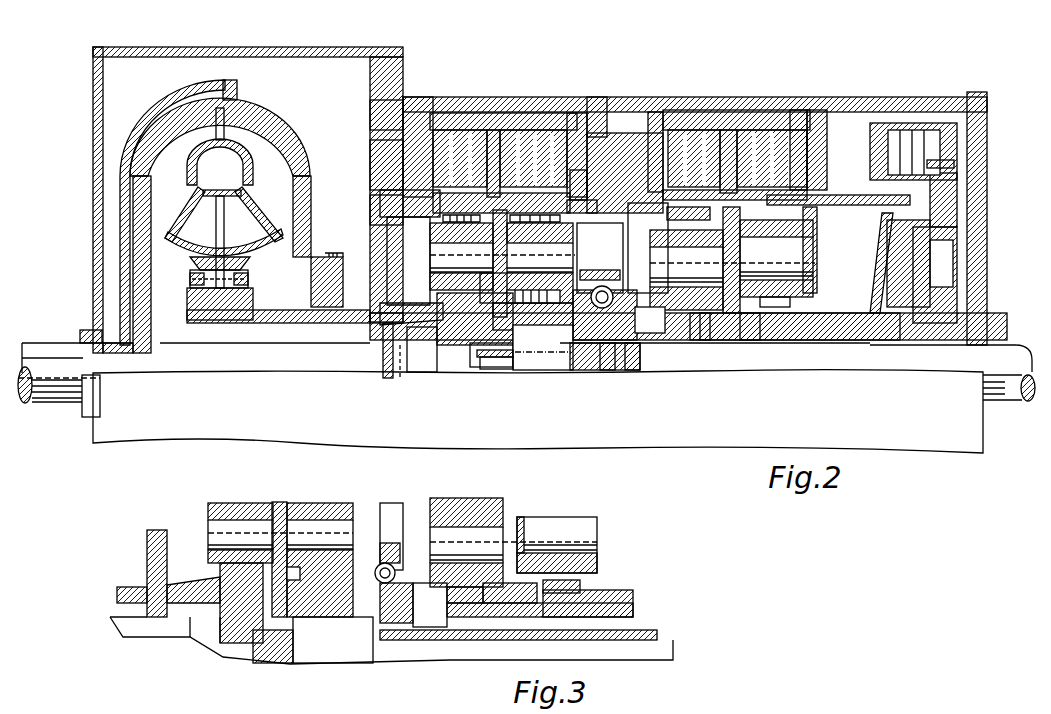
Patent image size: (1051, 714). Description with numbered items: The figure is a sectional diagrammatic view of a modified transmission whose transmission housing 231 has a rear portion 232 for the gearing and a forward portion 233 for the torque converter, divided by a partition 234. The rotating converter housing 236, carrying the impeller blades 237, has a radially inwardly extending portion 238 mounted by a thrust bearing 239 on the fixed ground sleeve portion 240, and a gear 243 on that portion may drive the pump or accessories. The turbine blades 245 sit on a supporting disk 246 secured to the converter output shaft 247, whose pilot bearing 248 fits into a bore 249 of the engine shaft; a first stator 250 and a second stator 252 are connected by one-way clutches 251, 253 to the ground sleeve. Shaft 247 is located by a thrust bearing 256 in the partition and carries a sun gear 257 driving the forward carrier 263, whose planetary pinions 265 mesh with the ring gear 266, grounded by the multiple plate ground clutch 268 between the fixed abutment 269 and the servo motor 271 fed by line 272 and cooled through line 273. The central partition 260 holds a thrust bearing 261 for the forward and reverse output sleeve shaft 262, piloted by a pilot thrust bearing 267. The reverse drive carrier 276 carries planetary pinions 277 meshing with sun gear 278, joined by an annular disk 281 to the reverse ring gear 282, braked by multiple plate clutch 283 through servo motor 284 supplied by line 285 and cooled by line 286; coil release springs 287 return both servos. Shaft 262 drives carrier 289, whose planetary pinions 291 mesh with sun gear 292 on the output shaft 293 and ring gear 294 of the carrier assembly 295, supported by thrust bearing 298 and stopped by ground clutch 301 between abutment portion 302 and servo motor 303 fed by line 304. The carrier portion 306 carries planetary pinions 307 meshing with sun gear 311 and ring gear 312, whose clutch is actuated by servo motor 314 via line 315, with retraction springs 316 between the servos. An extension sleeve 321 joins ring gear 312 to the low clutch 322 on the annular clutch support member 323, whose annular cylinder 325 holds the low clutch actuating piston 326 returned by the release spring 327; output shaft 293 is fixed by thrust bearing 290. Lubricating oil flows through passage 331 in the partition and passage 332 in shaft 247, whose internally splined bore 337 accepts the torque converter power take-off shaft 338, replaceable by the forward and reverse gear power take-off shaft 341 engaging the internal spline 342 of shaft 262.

In FIG. 2, the transmission housing 231 is at (973, 89).
In FIG. 2, the rear portion 232 is at (657, 97).
In FIG. 2, the forward portion 233 is at (122, 47).
In FIG. 2, the partition 234 is at (372, 163).
In FIG. 3, the partition 234 is at (150, 570).
In FIG. 2, the converter housing 236 is at (236, 84).
In FIG. 2, the impeller blades 237 is at (280, 133).
In FIG. 2, the radially inwardly extending portion 238 is at (308, 233).
In FIG. 2, the thrust bearing 239 is at (315, 323).
In FIG. 2, the ground sleeve portion 240 is at (243, 323).
In FIG. 2, the gear 243 is at (327, 263).
In FIG. 2, the turbine blades 245 is at (180, 123).
In FIG. 2, the supporting disk 246 is at (147, 337).
In FIG. 2, the converter output shaft 247 is at (177, 367).
In FIG. 3, the converter output shaft 247 is at (193, 630).
In FIG. 2, the pilot bearing 248 is at (113, 360).
In FIG. 2, the bore 249 is at (90, 353).
In FIG. 2, the first stator 250 is at (197, 220).
In FIG. 2, the one-way clutch 251 is at (190, 282).
In FIG. 2, the second stator 252 is at (253, 220).
In FIG. 2, the one-way clutch 253 is at (245, 280).
In FIG. 2, the thrust bearing 256 is at (372, 327).
In FIG. 2, the sun gear 257 is at (440, 303).
In FIG. 3, the sun gear 257 is at (223, 583).
In FIG. 2, the central partition 260 is at (620, 223).
In FIG. 3, the central partition 260 is at (380, 505).
In FIG. 2, the thrust bearing 261 is at (590, 310).
In FIG. 3, the thrust bearing 261 is at (375, 563).
In FIG. 2, the forward and reverse output sleeve shaft 262 is at (583, 343).
In FIG. 3, the forward and reverse output sleeve shaft 262 is at (373, 645).
In FIG. 2, the forward carrier 263 is at (475, 319).
In FIG. 2, the planetary pinions 265 is at (430, 240).
In FIG. 3, the planetary pinions 265 is at (210, 505).
In FIG. 2, the ring gear 266 is at (433, 197).
In FIG. 2, the pilot thrust bearing 267 is at (440, 350).
In FIG. 2, the multiple plate ground clutch 268 is at (450, 120).
In FIG. 2, the fixed abutment 269 is at (492, 123).
In FIG. 2, the servo motor 271 is at (420, 160).
In FIG. 2, the line 272 is at (370, 122).
In FIG. 2, the line 273 is at (370, 206).
In FIG. 2, the reverse drive carrier 276 is at (567, 237).
In FIG. 3, the reverse drive carrier 276 is at (353, 503).
In FIG. 2, the planetary pinions 277 is at (527, 287).
In FIG. 2, the sun gear 278 is at (543, 313).
In FIG. 2, the annular disk 281 is at (493, 243).
In FIG. 2, the reverse ring gear 282 is at (572, 180).
In FIG. 2, the multiple plate clutch 283 is at (527, 133).
In FIG. 2, the servo motor 284 is at (580, 107).
In FIG. 2, the line 285 is at (597, 127).
In FIG. 2, the line 286 is at (573, 203).
In FIG. 2, the coil release springs 287 is at (473, 103).
In FIG. 2, the carrier 289 is at (648, 333).
In FIG. 3, the carrier 289 is at (500, 523).
In FIG. 2, the thrust bearing 290 is at (988, 310).
In FIG. 2, the planetary pinions 291 is at (697, 243).
In FIG. 2, the sun gear 292 is at (700, 340).
In FIG. 2, the output shaft 293 is at (853, 343).
In FIG. 3, the output shaft 293 is at (600, 600).
In FIG. 2, the ring gear 294 is at (668, 214).
In FIG. 2, the carrier assembly 295 is at (823, 238).
In FIG. 2, the thrust bearing 298 is at (750, 327).
In FIG. 2, the multiple plate ground clutch 301 is at (682, 140).
In FIG. 2, the abutment portion 302 is at (727, 113).
In FIG. 2, the servo motor 303 is at (583, 183).
In FIG. 2, the line 304 is at (637, 130).
In FIG. 2, the carrier portion 306 is at (807, 285).
In FIG. 2, the planetary pinions 307 is at (790, 227).
In FIG. 2, the sun gear 311 is at (787, 337).
In FIG. 2, the ring gear 312 is at (780, 200).
In FIG. 2, the servo motor 314 is at (792, 120).
In FIG. 2, the line 315 is at (813, 123).
In FIG. 2, the retraction springs 316 is at (774, 117).
In FIG. 2, the extension sleeve 321 is at (867, 197).
In FIG. 2, the low clutch 322 is at (903, 140).
In FIG. 2, the annular clutch support member 323 is at (753, 143).
In FIG. 2, the annular cylinder 325 is at (957, 190).
In FIG. 2, the low clutch actuating piston 326 is at (955, 166).
In FIG. 2, the release spring 327 is at (880, 270).
In FIG. 2, the passage 331 is at (373, 347).
In FIG. 2, the passage 332 is at (400, 380).
In FIG. 2, the internally splined bore 337 is at (495, 357).
In FIG. 3, the internally splined bore 337 is at (273, 645).
In FIG. 2, the torque converter power take-off shaft 338 is at (497, 367).
In FIG. 3, the torque converter power take-off shaft 338 is at (307, 655).
In FIG. 2, the forward and reverse gear power take-off shaft 341 is at (630, 345).
In FIG. 3, the forward and reverse gear power take-off shaft 341 is at (457, 630).
In FIG. 2, the internal spline 342 is at (610, 352).
In FIG. 3, the internal spline 342 is at (393, 632).